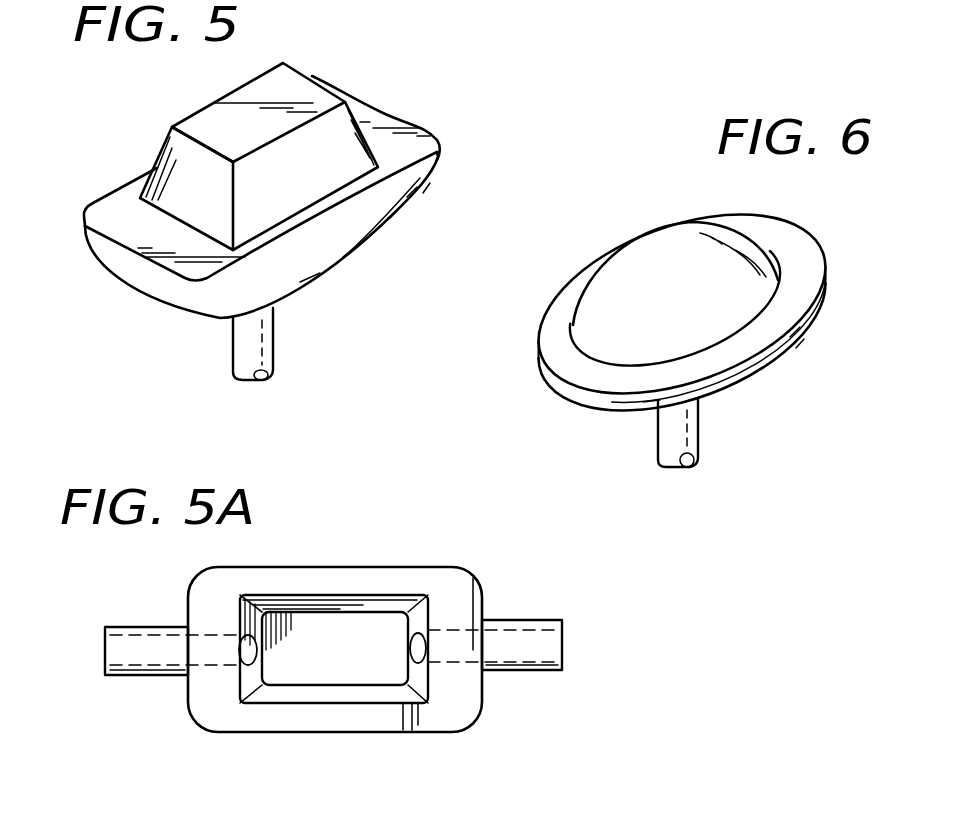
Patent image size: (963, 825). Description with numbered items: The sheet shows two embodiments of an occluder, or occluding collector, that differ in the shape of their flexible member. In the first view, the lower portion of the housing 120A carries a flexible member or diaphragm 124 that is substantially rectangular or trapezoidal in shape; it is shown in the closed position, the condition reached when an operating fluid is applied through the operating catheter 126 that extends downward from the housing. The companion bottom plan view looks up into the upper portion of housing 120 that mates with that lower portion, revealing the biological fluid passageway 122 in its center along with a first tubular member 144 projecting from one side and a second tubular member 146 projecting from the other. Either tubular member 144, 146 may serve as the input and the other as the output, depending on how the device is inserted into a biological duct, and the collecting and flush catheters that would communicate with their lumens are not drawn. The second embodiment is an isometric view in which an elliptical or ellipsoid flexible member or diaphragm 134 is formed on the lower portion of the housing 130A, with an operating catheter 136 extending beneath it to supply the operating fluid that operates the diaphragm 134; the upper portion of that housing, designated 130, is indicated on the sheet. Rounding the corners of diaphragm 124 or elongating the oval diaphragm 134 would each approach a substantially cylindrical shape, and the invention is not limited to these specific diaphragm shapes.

In FIG. 5A, the upper portion of housing 120 is at (410, 567).
In FIG. 5, the lower portion of housing 120A is at (410, 207).
In FIG. 5A, the biological fluid passageway 122 is at (365, 677).
In FIG. 5, the flexible member or diaphragm 124 is at (350, 108).
In FIG. 5, the operating catheter 126 is at (272, 357).
In FIG. 6, the upper portion of housing 130 is at (784, 808).
In FIG. 6, the lower portion of housing 130A is at (785, 345).
In FIG. 6, the flexible member or diaphragm 134 is at (658, 228).
In FIG. 6, the operating catheter 136 is at (699, 438).
In FIG. 5A, the first tubular member 144 is at (522, 620).
In FIG. 5A, the second tubular member 146 is at (128, 627).